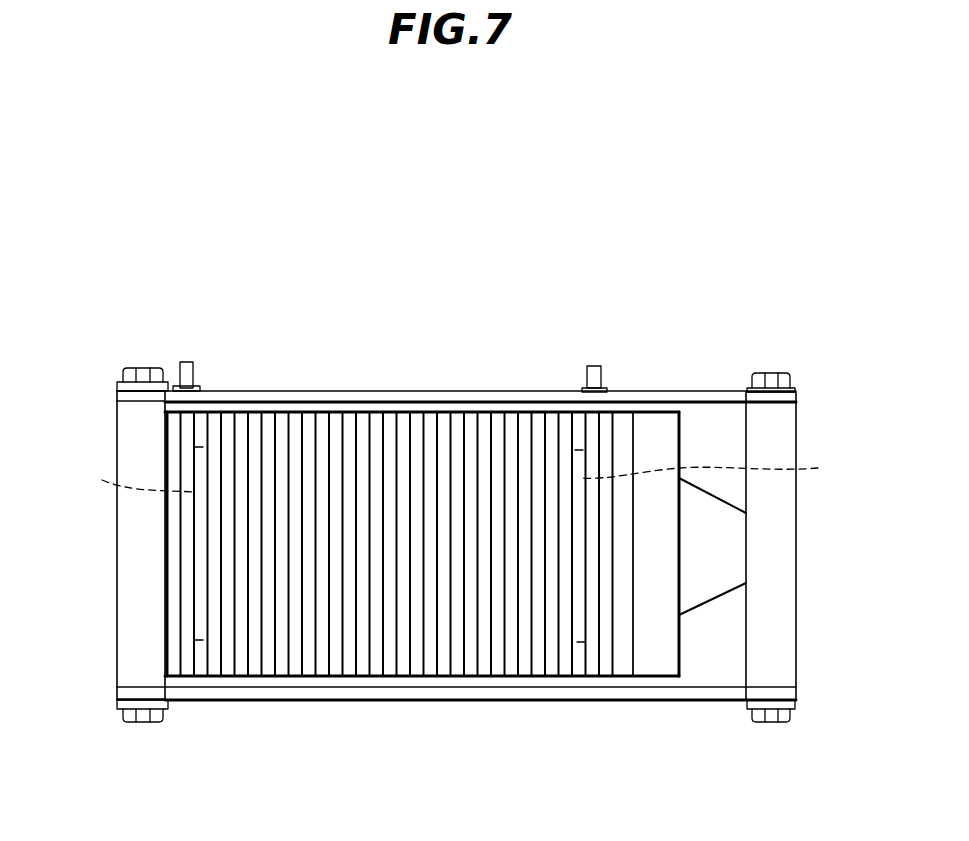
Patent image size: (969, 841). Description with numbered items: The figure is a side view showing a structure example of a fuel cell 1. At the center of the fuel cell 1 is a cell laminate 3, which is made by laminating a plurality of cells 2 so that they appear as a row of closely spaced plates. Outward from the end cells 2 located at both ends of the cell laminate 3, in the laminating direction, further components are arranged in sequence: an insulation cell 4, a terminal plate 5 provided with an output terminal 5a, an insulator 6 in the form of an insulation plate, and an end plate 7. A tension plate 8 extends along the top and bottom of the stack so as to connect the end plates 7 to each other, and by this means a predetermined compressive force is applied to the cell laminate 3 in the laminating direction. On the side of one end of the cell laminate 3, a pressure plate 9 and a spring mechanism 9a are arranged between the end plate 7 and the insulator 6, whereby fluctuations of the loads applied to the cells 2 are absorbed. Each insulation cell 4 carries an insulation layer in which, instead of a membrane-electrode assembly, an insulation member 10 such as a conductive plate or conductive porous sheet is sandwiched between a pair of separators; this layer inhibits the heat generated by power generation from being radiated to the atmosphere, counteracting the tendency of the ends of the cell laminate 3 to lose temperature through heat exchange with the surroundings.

The fuel cell 1 is at (580, 208).
The cell 2 is at (221, 420).
The cell laminate 3 is at (230, 287).
The insulation cell 4 is at (200, 434).
The terminal plate 5 is at (183, 668).
The output terminal 5a is at (186, 370).
The insulator 6 is at (172, 668).
The end plate 7 is at (135, 667).
The tension plate 8 is at (695, 397).
The pressure plate 9 is at (670, 437).
The spring mechanism 9a is at (728, 542).
The insulation member 10 is at (459, 469).